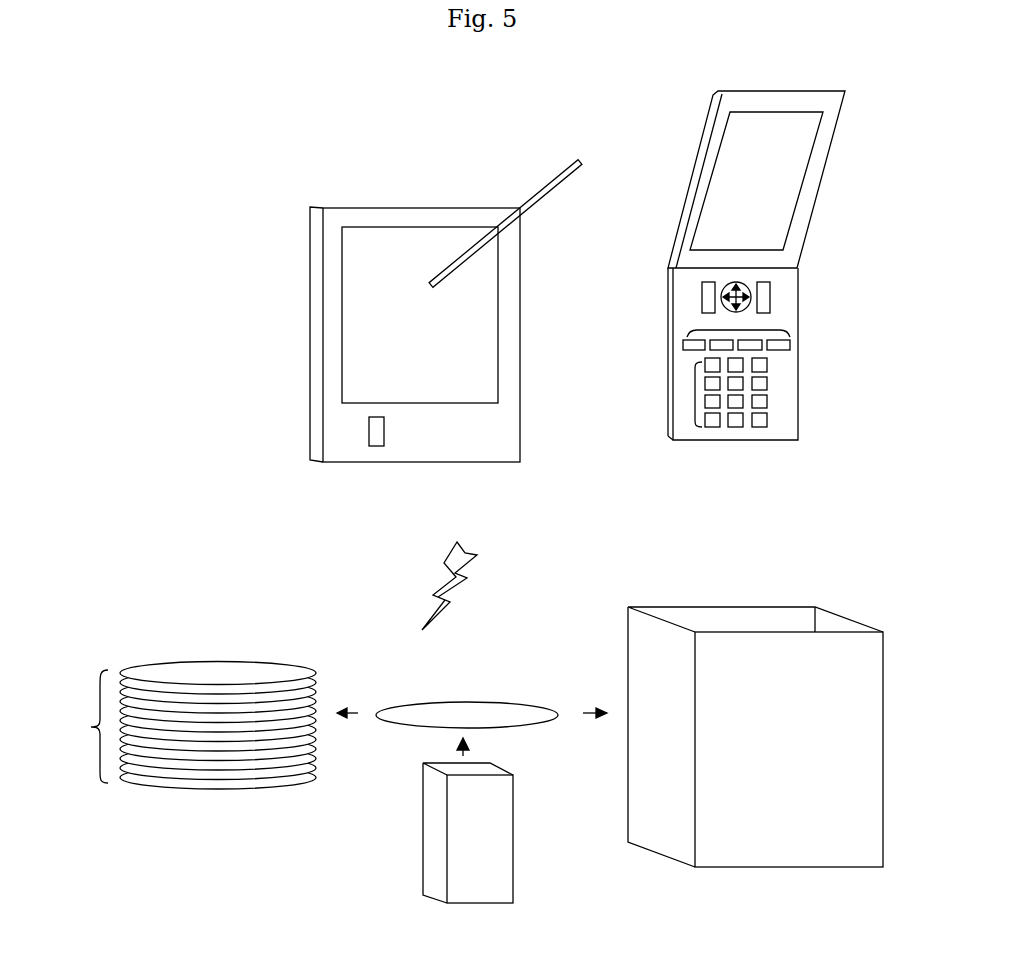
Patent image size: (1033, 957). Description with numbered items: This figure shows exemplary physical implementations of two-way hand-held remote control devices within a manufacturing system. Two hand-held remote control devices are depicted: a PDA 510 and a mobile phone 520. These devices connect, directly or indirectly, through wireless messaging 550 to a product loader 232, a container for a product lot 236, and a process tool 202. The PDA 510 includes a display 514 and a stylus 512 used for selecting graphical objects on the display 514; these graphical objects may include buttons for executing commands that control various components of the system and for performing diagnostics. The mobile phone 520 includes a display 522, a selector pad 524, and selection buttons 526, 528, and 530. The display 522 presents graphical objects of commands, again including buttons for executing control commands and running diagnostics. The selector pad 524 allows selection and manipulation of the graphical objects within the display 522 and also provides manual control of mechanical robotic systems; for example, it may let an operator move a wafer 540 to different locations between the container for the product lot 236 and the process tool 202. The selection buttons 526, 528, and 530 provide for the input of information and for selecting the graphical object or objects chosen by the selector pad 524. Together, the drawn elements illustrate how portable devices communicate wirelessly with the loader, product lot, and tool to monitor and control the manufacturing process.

The hand-held remote control device (PDA) 510 is at (299, 338).
The stylus 512 is at (581, 158).
The display 514 is at (479, 306).
The hand-held remote control device (mobile phone) 520 is at (838, 178).
The display 522 is at (765, 140).
The selector pad 524 is at (750, 290).
The selection button 526 is at (763, 297).
The selection button 528 is at (733, 330).
The selection button 530 is at (695, 394).
The product lot 236 is at (90, 756).
The wafer 540 is at (447, 714).
The wireless messaging 550 is at (467, 552).
The product loader 232 is at (422, 878).
The process tool 202 is at (883, 813).